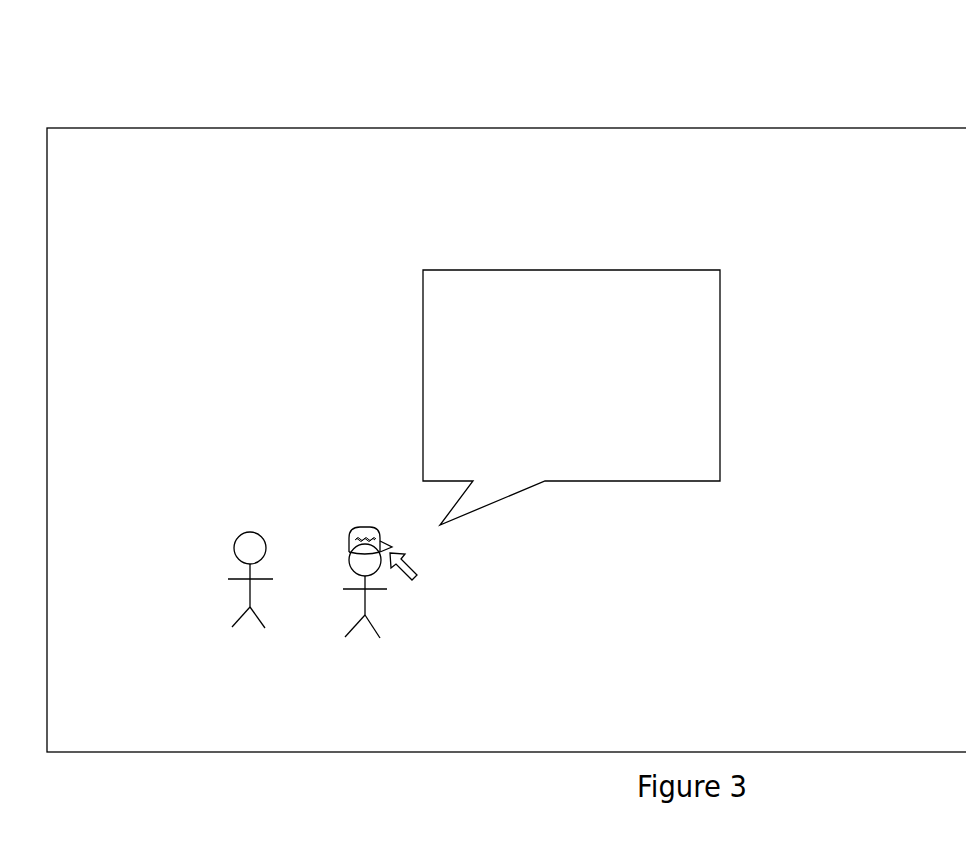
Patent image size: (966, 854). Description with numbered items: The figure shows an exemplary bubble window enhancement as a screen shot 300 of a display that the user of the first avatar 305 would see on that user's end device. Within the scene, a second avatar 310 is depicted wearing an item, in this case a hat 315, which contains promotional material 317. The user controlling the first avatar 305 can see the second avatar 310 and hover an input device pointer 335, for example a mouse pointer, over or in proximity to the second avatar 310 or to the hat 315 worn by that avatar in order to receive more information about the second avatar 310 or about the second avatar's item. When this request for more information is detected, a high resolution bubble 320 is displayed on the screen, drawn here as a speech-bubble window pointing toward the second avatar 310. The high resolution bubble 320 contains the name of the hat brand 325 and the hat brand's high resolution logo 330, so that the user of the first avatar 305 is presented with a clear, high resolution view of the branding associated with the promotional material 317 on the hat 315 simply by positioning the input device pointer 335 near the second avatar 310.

The screen shot 300 is at (150, 66).
The first avatar 305 is at (248, 634).
The second avatar 310 is at (367, 640).
The hat 315 is at (352, 538).
The promotional material 317 is at (365, 528).
The high resolution bubble 320 is at (517, 270).
The name of the hat brand 325 is at (685, 302).
The high resolution logo 330 is at (592, 423).
The input device pointer 335 is at (414, 582).